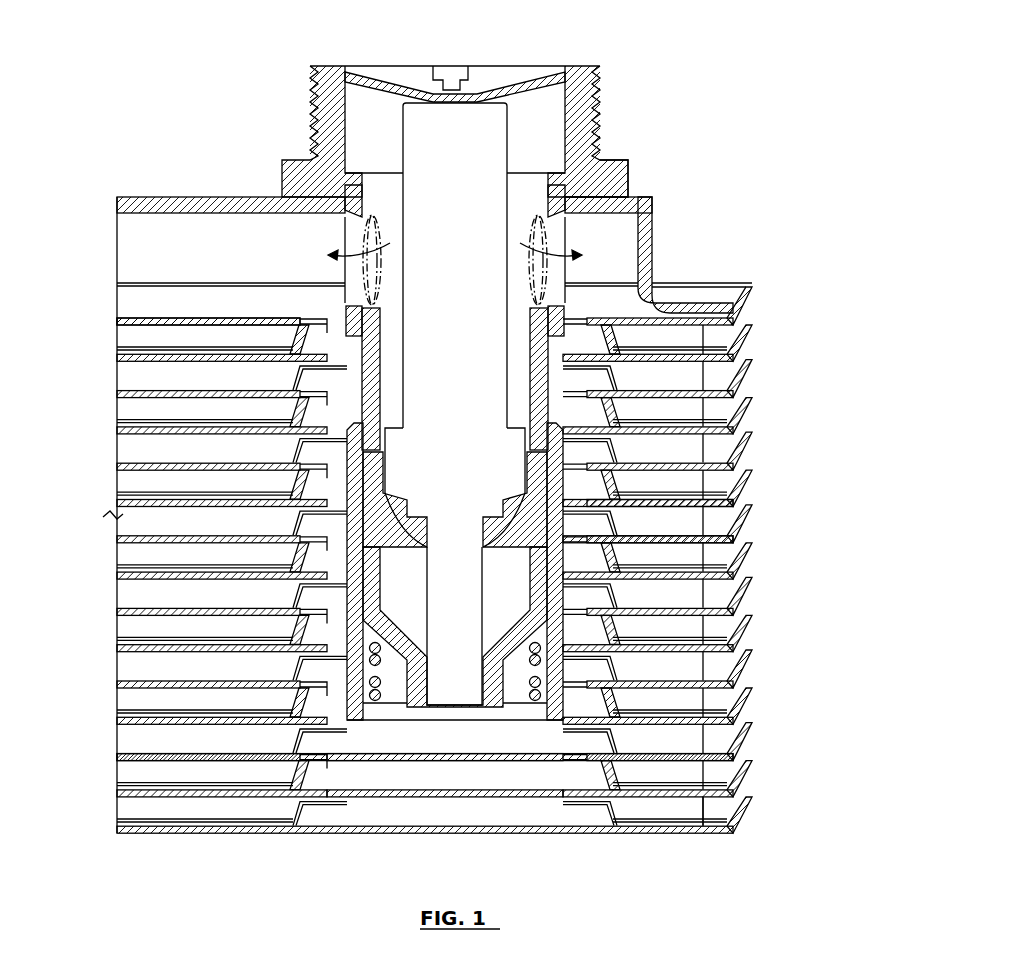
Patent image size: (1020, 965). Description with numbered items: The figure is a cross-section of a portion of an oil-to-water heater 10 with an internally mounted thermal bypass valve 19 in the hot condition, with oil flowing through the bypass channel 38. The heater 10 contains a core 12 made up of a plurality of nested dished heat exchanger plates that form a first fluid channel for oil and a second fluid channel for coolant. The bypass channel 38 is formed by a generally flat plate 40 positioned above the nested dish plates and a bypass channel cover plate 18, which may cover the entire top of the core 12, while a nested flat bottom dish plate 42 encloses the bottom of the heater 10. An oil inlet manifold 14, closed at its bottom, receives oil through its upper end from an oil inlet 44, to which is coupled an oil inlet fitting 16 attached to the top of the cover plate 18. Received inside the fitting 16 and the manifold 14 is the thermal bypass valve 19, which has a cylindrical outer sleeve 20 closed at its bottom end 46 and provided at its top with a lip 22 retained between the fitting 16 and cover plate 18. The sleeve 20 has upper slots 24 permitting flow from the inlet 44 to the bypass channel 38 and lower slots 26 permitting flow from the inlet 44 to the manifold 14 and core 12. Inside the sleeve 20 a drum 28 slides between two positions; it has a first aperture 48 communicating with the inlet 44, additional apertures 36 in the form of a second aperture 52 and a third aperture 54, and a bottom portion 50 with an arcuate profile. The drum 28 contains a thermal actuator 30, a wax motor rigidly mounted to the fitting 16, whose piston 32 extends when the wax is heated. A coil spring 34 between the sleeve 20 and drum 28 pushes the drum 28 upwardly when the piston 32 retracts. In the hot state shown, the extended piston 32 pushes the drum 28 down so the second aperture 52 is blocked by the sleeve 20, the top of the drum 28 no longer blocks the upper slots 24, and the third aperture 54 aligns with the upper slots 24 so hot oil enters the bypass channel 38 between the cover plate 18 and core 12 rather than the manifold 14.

The OTW heater 10 is at (170, 153).
The core 12 is at (750, 445).
The oil inlet manifold 14 is at (538, 740).
The oil inlet fitting 16 is at (600, 128).
The bypass channel cover plate 18 is at (225, 197).
The thermal bypass valve 19 is at (465, 308).
The outer sleeve 20 is at (352, 487).
The lip 22 is at (620, 184).
The upper slots 24 is at (555, 226).
The lower slots 26 is at (595, 330).
The drum 28 is at (352, 212).
The thermal actuator 30 is at (457, 478).
The piston 32 is at (468, 650).
The coil spring 34 is at (540, 670).
The apertures 36 is at (380, 495).
The bypass channel 38 is at (170, 259).
The flat plate 40 is at (192, 318).
The flat bottom dish plate 42 is at (252, 836).
The oil inlet 44 is at (525, 212).
The bottom end 46 is at (375, 712).
The first aperture 48 is at (527, 210).
The bottom portion 50 is at (440, 718).
The second aperture 52 is at (585, 545).
The third aperture 54 is at (575, 250).